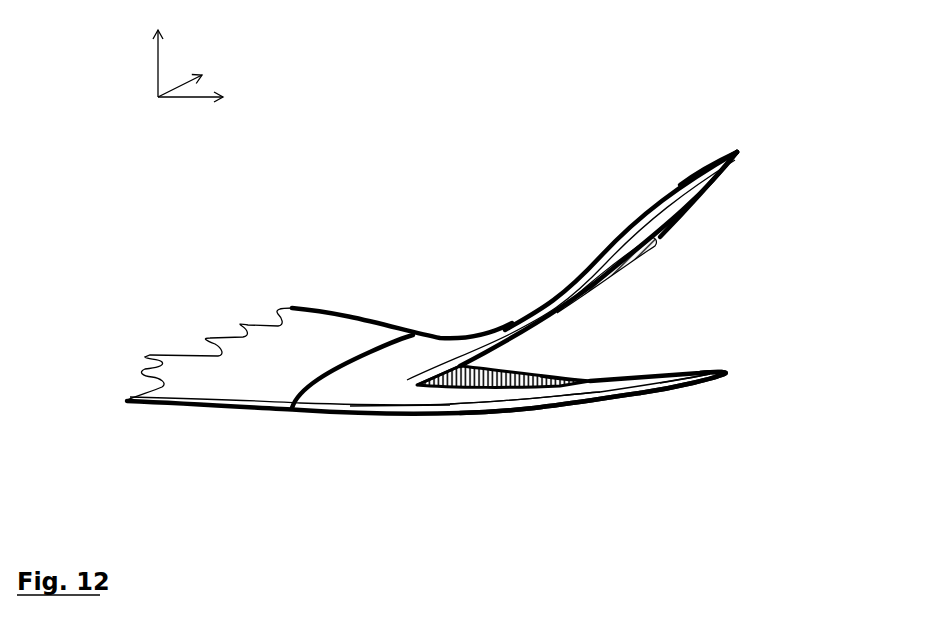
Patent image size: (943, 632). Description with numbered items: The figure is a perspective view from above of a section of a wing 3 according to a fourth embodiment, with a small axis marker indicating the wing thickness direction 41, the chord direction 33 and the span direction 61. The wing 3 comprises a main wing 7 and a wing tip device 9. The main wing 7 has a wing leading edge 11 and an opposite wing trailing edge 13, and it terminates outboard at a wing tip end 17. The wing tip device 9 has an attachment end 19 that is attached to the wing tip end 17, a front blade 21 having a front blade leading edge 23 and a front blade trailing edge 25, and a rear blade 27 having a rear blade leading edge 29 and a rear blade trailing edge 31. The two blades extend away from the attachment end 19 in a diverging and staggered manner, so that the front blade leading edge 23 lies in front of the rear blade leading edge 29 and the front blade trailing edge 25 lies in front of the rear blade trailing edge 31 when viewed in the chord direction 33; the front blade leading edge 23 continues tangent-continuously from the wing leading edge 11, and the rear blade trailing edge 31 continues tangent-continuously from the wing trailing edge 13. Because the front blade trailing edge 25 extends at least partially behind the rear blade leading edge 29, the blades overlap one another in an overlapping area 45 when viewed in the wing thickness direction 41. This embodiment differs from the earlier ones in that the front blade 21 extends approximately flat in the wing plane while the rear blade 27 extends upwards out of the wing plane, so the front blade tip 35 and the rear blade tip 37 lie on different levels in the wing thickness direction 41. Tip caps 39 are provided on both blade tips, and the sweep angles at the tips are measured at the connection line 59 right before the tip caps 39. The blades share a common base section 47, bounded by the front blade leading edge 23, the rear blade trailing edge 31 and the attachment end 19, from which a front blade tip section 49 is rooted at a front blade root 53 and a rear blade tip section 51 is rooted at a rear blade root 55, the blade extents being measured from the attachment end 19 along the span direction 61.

The wing 3 is at (247, 260).
The main wing 7 is at (255, 370).
The wing tip device 9 is at (523, 247).
The wing leading edge 11 is at (182, 407).
The wing trailing edge 13 is at (325, 317).
The wing tip end 17 is at (358, 350).
The attachment end 19 is at (380, 360).
The front blade 21 is at (523, 385).
The front blade leading edge 23 is at (478, 410).
The front blade trailing edge 25 is at (540, 367).
The rear blade 27 is at (625, 253).
The rear blade leading edge 29 is at (673, 188).
The rear blade trailing edge 31 is at (693, 208).
The chord direction 33 is at (190, 71).
The front blade tip 35 is at (675, 388).
The rear blade tip 37 is at (707, 165).
The tip caps 39 is at (707, 373).
The wing thickness direction 41 is at (161, 51).
The overlapping area 45 is at (462, 388).
The base section 47 is at (382, 375).
The front blade tip section 49 is at (553, 388).
The rear blade tip section 51 is at (658, 227).
The front blade root 53 is at (397, 400).
The rear blade root 55 is at (437, 362).
The connection line 59 is at (687, 383).
The span direction 61 is at (206, 96).